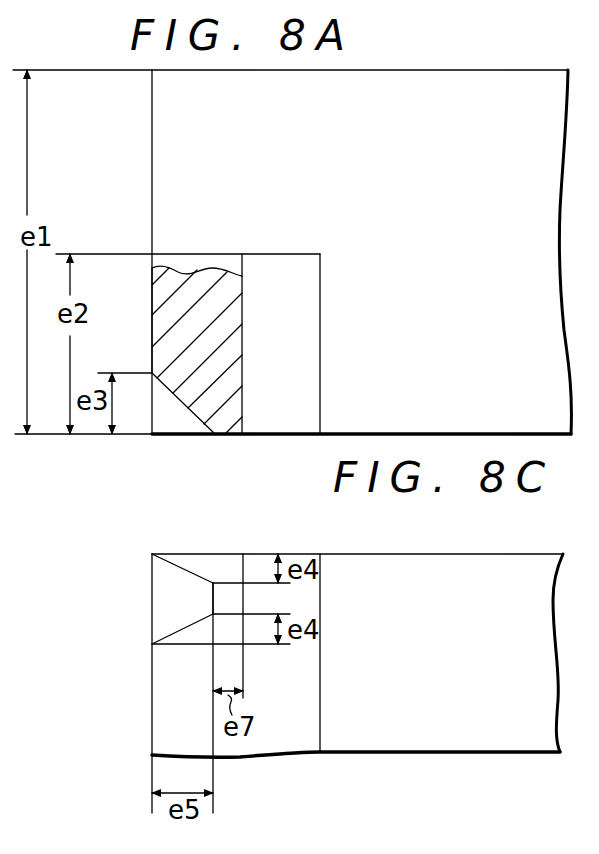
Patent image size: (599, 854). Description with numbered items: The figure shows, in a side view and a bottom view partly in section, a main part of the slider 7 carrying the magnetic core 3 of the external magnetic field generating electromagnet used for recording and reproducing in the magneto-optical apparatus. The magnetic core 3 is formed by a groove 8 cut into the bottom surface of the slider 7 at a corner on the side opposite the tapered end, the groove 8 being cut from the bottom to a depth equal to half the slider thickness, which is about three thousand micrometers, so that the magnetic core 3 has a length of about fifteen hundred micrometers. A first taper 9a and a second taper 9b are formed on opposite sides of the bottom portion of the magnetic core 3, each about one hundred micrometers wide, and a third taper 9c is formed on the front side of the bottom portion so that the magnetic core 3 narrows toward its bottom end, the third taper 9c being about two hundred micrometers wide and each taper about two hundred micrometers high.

In FIG. 8A, the magnetic core 3 is at (160, 296).
In FIG. 8C, the magnetic core 3 is at (187, 553).
In FIG. 8A, the slider 7 is at (479, 80).
In FIG. 8C, the slider 7 is at (481, 558).
In FIG. 8A, the groove 8 is at (277, 420).
In FIG. 8C, the groove 8 is at (165, 690).
In FIG. 8C, the first taper 9a is at (222, 565).
In FIG. 8C, the second taper 9b is at (200, 640).
In FIG. 8A, the third taper 9c is at (183, 436).
In FIG. 8C, the third taper 9c is at (163, 593).